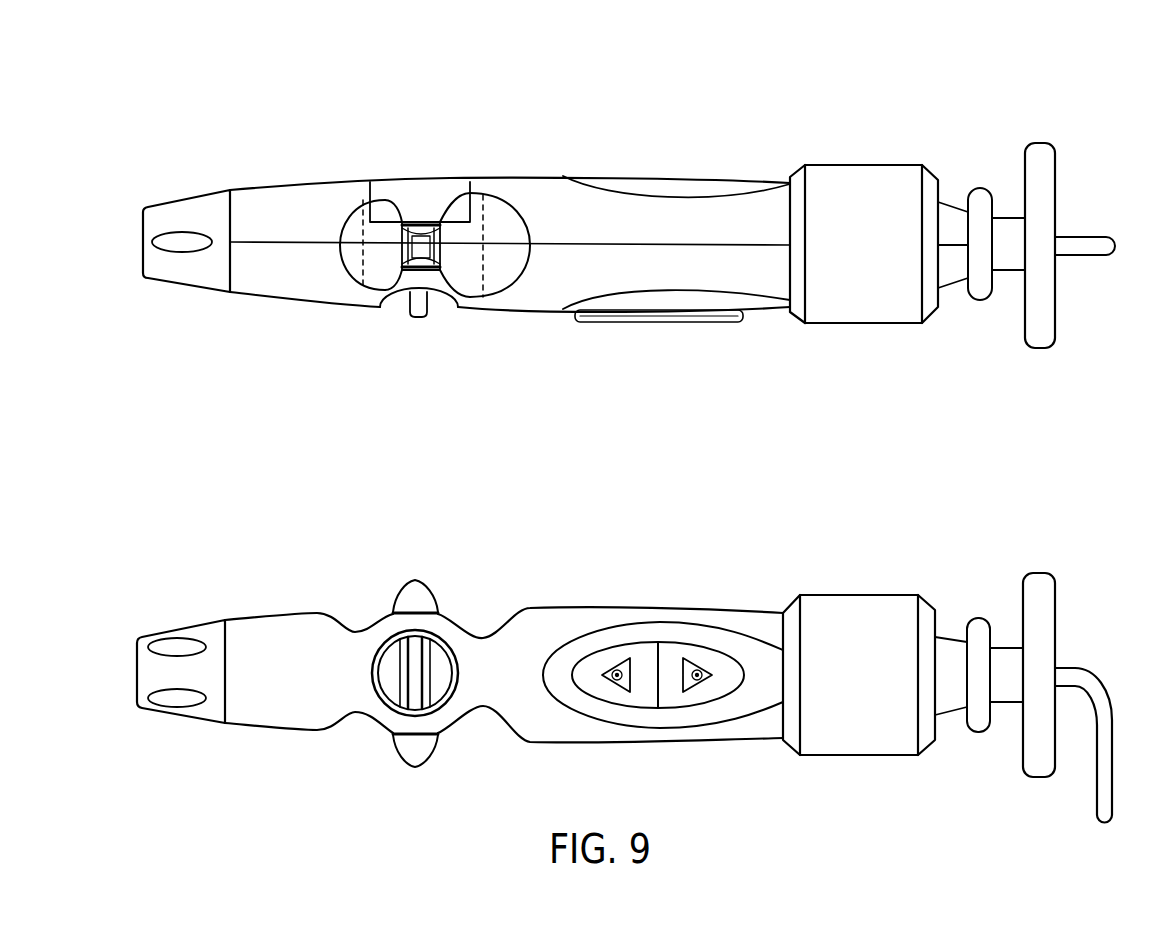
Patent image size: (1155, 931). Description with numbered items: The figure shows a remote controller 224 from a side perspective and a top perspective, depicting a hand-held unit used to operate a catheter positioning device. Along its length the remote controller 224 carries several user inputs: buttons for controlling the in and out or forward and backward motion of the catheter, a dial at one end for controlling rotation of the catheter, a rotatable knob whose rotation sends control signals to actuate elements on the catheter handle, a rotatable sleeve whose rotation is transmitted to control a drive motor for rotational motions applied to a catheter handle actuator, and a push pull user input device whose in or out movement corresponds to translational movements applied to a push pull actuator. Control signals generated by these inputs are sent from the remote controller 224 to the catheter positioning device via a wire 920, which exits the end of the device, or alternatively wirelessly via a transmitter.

The remote controller 224 is at (440, 95).
The wire 920 is at (1078, 680).